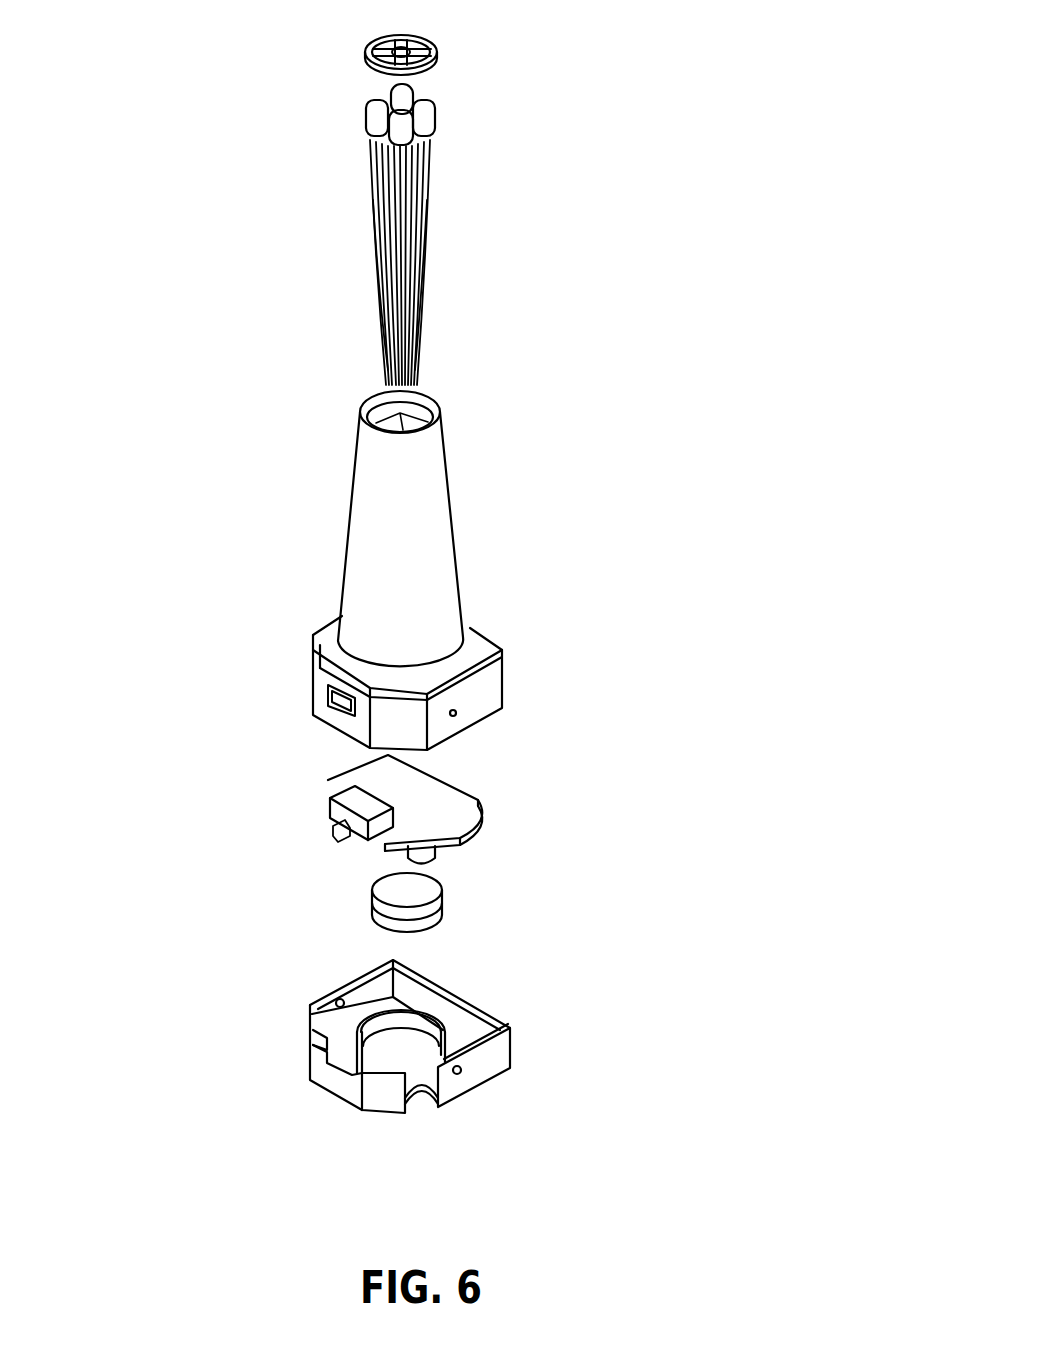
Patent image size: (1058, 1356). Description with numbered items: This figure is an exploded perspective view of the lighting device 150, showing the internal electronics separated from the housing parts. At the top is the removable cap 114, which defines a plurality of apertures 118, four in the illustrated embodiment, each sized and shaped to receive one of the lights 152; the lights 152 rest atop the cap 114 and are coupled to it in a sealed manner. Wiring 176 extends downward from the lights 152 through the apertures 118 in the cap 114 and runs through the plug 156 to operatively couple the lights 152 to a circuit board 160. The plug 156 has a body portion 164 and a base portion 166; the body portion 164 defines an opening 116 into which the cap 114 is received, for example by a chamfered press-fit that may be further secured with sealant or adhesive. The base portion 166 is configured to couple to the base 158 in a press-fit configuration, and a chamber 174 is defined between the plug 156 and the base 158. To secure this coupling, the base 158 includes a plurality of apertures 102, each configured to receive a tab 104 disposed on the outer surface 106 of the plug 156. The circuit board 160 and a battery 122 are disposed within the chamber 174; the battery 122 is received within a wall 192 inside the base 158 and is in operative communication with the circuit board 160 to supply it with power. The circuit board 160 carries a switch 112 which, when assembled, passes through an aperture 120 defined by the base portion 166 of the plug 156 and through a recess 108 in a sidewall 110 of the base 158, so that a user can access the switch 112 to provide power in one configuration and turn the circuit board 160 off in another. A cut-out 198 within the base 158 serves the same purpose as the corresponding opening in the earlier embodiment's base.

The lighting device 150 is at (643, 357).
The apertures 118 is at (367, 55).
The removable cap 114 is at (433, 75).
The lights 152 is at (350, 108).
The wiring 176 is at (350, 247).
The plug 156 is at (297, 520).
The opening 116 is at (440, 385).
The body portion 164 is at (417, 550).
The base portion 166 is at (528, 680).
The aperture 120 is at (323, 692).
The outer surface 106 is at (485, 702).
The tab 104 is at (453, 713).
The switch 112 is at (342, 828).
The circuit board 160 is at (455, 853).
The battery 122 is at (455, 915).
The base 158 is at (498, 1087).
The chamber 174 is at (382, 992).
The wall 192 is at (373, 1031).
The sidewall 110 is at (323, 1070).
The apertures 102 is at (470, 1060).
The recess 108 is at (340, 1077).
The cut-out 198 is at (421, 1115).